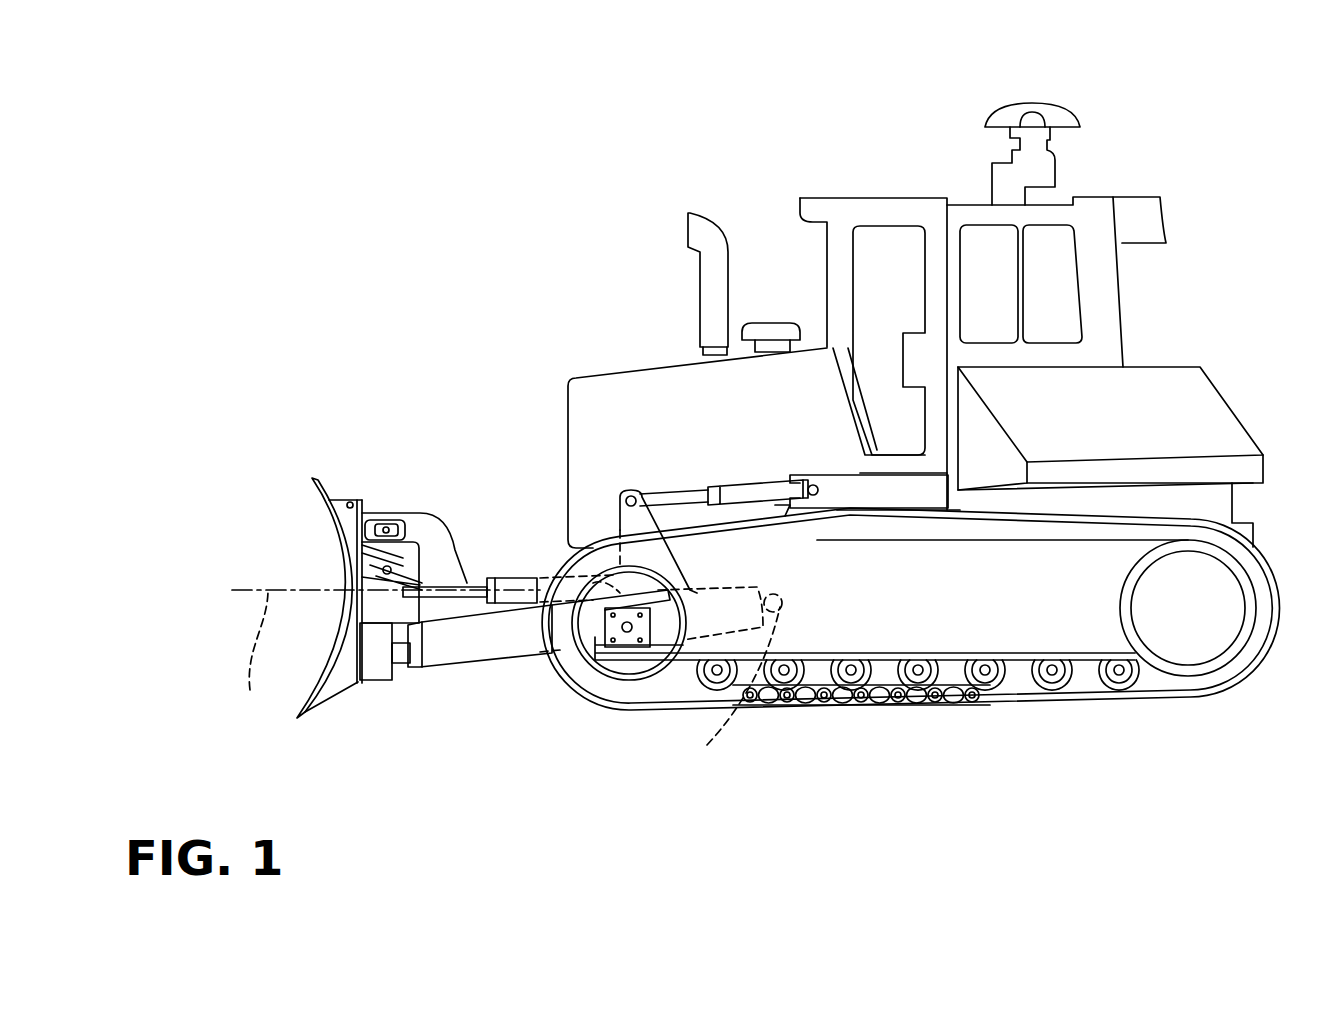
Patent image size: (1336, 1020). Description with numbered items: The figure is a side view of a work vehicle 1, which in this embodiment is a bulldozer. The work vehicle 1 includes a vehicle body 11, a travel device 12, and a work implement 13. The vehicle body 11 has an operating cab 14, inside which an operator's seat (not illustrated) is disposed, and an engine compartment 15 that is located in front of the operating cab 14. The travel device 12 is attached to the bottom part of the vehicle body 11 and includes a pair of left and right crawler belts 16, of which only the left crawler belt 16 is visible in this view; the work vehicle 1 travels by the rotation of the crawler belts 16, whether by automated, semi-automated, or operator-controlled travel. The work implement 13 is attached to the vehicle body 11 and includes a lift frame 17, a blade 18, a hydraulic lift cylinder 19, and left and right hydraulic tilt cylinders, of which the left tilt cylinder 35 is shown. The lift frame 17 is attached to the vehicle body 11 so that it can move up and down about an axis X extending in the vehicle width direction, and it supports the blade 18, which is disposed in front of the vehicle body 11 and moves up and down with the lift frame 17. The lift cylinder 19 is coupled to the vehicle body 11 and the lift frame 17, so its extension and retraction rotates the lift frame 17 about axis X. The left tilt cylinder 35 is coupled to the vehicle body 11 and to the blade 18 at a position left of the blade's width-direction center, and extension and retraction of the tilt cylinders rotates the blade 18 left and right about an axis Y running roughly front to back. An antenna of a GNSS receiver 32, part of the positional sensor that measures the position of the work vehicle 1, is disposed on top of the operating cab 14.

The work vehicle 1 is at (371, 184).
The vehicle body 11 is at (652, 281).
The travel device 12 is at (1166, 719).
The work implement 13 is at (437, 453).
The operating cab 14 is at (843, 210).
The engine compartment 15 is at (768, 385).
The crawler belt 16 is at (1035, 717).
The lift frame 17 is at (497, 653).
The blade 18 is at (345, 546).
The hydraulic lift cylinder 19 is at (745, 493).
The GNSS receiver 32 is at (1020, 110).
The left hydraulic tilt cylinder 35 is at (517, 580).